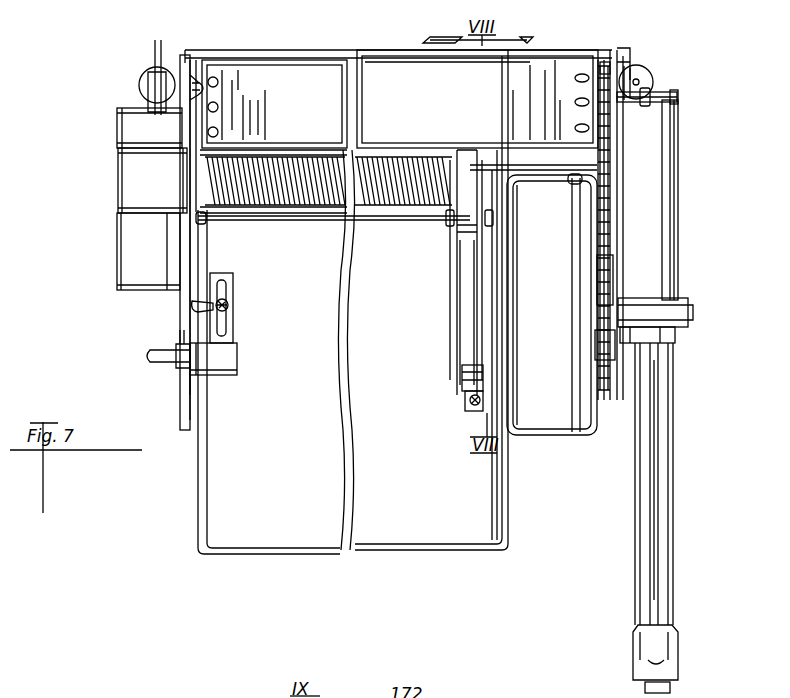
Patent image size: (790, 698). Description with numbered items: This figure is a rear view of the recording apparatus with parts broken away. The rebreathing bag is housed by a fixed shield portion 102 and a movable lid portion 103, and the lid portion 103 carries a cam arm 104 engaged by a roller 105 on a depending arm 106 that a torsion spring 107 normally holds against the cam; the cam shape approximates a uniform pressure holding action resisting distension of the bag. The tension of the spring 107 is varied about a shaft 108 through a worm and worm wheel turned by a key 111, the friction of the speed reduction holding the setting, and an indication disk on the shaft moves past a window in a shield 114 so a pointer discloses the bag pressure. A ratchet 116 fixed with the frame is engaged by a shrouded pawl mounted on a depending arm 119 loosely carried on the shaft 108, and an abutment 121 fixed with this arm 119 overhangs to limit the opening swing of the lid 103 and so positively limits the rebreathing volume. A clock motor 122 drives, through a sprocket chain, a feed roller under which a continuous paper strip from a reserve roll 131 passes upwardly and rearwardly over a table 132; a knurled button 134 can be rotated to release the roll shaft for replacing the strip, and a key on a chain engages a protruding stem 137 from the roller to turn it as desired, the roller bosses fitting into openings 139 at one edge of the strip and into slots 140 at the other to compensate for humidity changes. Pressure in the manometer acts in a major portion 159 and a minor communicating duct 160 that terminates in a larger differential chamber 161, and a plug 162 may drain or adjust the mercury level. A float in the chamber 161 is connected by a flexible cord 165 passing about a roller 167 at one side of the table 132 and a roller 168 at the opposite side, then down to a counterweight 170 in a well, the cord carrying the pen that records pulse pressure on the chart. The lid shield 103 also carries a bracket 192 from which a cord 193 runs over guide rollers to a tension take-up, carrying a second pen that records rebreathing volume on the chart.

The fixed shield portion 102 is at (504, 548).
The movable lid portion 103 is at (468, 527).
The cam arm 104 is at (465, 400).
The roller 105 is at (462, 373).
The depending arm 106 is at (458, 318).
The torsion spring 107 is at (450, 220).
The shaft 108 is at (390, 200).
The key 111 is at (150, 127).
The shield 114 is at (120, 180).
The ratchet 116 is at (182, 338).
The depending arm 119 is at (187, 297).
The abutment 121 is at (212, 372).
The clock motor 122 is at (540, 423).
The reserve roll 131 is at (310, 55).
The table 132 is at (597, 210).
The knurled button 134 is at (675, 107).
The protruding stem 137 is at (685, 95).
The openings 139 is at (220, 105).
The slots 140 is at (575, 100).
The major portion 159 is at (673, 523).
The minor communicating duct 160 is at (660, 492).
The differential chamber 161 is at (664, 243).
The plug 162 is at (672, 688).
The flexible cord 165 is at (622, 68).
The roller 167 is at (648, 80).
The roller 168 is at (140, 85).
The counterweight 170 is at (140, 238).
The bracket 192 is at (206, 302).
The cord 193 is at (196, 78).